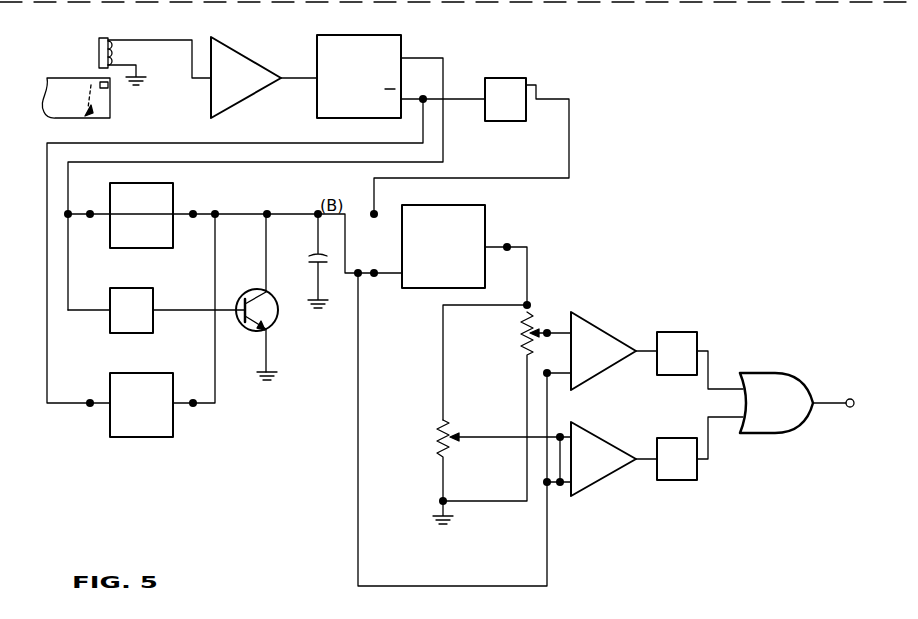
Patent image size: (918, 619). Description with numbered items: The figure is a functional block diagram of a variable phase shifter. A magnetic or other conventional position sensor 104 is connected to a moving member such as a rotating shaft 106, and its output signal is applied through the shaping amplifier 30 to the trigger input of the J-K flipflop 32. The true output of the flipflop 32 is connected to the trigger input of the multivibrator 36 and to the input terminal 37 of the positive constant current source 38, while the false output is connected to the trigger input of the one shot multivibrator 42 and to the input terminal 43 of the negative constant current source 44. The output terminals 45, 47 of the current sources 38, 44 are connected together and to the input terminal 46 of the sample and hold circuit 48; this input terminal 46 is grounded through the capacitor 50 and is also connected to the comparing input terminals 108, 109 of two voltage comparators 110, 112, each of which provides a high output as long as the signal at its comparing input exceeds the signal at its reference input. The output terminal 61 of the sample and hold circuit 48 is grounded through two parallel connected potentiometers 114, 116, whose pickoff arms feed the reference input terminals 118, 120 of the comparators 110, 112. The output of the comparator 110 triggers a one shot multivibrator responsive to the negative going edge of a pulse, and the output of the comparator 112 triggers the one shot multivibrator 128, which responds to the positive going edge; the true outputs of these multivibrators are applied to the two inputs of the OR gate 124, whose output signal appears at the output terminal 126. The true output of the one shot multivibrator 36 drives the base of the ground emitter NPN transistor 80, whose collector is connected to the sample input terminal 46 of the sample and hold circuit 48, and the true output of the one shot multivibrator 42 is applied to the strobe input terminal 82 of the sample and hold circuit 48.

The position sensor 104 is at (99, 52).
The rotating shaft 106 is at (110, 118).
The shaping amplifier 30 is at (256, 58).
The J-K flipflop 32 is at (401, 40).
The one shot multivibrator 42 is at (507, 77).
The positive constant current source 38 is at (174, 190).
The input terminal 37 is at (91, 209).
The output terminal 45 is at (194, 219).
The multivibrator 36 is at (155, 290).
The ground emitter NPN transistor 80 is at (276, 305).
The capacitor 50 is at (309, 257).
The negative constant current source 44 is at (128, 372).
The input terminal 43 is at (90, 398).
The output terminal 47 is at (194, 397).
The strobe input terminal 82 is at (375, 219).
The input terminal 46 is at (374, 280).
The sample and hold circuit 48 is at (485, 213).
The output terminal 61 is at (507, 247).
The potentiometer 114 is at (519, 337).
The reference input terminal 118 is at (547, 338).
The comparing input terminal 108 is at (548, 378).
The potentiometer 116 is at (433, 440).
The reference input terminal 120 is at (556, 433).
The comparing input terminal 109 is at (560, 488).
The voltage comparator 110 is at (608, 331).
The voltage comparator 112 is at (692, 332).
The one shot multivibrator 128 is at (698, 481).
The OR gate 124 is at (794, 375).
The output terminal 126 is at (850, 398).